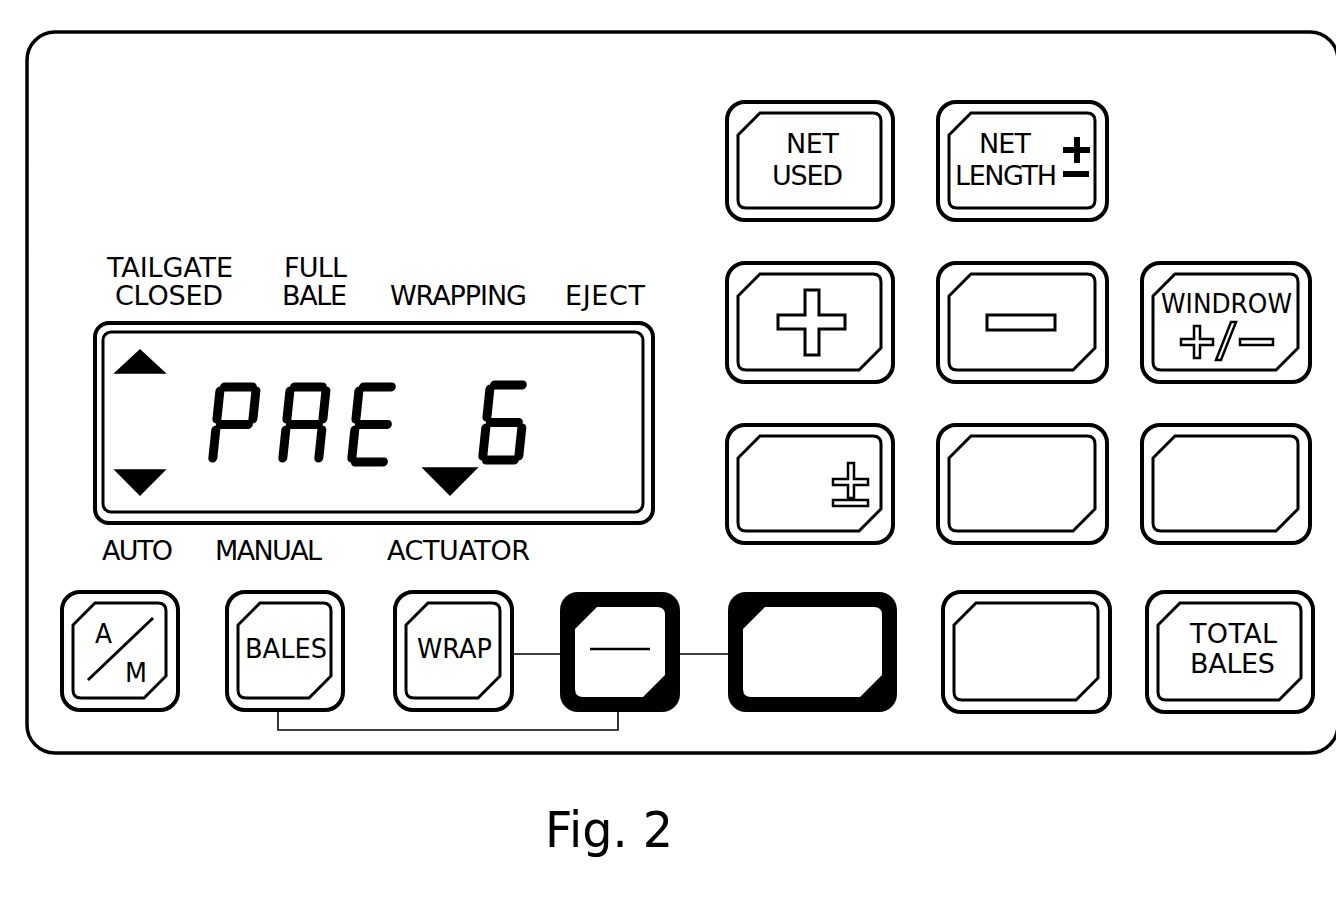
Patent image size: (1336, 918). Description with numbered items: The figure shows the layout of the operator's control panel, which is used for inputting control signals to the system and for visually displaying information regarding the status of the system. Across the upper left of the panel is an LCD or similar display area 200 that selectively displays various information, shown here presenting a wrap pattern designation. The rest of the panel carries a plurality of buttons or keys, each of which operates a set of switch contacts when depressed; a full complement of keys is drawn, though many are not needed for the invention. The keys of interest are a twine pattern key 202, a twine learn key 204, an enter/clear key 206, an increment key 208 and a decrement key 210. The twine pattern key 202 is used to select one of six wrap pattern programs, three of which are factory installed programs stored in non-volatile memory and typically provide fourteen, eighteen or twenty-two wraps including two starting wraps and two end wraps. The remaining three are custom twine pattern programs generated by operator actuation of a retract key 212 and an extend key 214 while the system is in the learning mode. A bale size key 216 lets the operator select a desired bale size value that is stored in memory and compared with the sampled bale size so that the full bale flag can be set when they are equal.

The display area 200 is at (356, 358).
The twine pattern key 202 is at (782, 592).
The twine learn key 204 is at (1015, 592).
The enter/clear key 206 is at (727, 162).
The increment key 208 is at (818, 265).
The decrement key 210 is at (988, 265).
The retract key 212 is at (1195, 427).
The extend key 214 is at (1000, 427).
The bale size key 216 is at (790, 427).